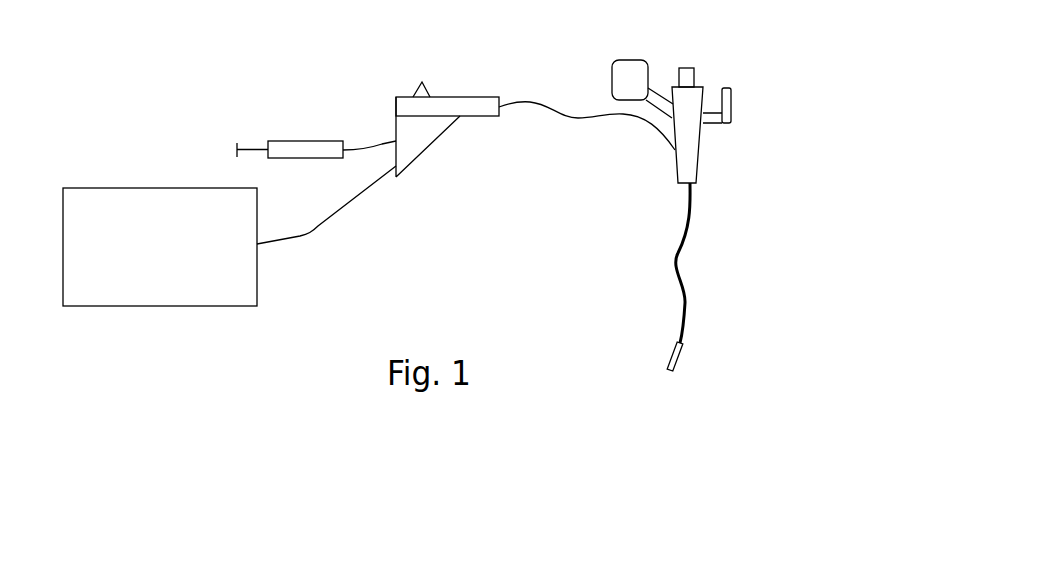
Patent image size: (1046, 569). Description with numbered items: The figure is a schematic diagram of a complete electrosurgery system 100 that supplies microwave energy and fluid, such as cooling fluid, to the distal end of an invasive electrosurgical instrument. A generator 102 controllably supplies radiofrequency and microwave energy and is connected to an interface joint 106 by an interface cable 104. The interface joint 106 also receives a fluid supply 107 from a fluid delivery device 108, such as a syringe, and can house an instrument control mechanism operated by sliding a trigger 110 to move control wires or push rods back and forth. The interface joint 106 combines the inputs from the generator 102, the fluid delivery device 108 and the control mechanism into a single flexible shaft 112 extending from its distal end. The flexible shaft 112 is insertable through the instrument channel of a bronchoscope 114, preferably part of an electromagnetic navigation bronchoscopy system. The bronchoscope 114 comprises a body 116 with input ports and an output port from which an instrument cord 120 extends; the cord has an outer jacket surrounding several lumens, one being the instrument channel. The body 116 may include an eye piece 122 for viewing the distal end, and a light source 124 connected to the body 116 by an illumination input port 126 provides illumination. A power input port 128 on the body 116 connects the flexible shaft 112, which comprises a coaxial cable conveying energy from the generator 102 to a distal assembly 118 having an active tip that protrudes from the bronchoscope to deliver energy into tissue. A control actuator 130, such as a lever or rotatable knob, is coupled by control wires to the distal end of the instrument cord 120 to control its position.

The electrosurgery system 100 is at (187, 365).
The generator 102 is at (141, 257).
The interface cable 104 is at (340, 213).
The interface joint 106 is at (427, 147).
The fluid supply 107 is at (382, 143).
The fluid delivery device 108 is at (282, 142).
The trigger 110 is at (418, 95).
The flexible shaft 112 is at (587, 117).
The bronchoscope 114 is at (780, 75).
The body 116 is at (692, 138).
The distal assembly 118 is at (683, 355).
The instrument cord 120 is at (673, 268).
The eye piece 122 is at (690, 77).
The light source 124 is at (630, 68).
The illumination input port 126 is at (657, 95).
The power input port 128 is at (677, 153).
The control actuator 130 is at (731, 103).